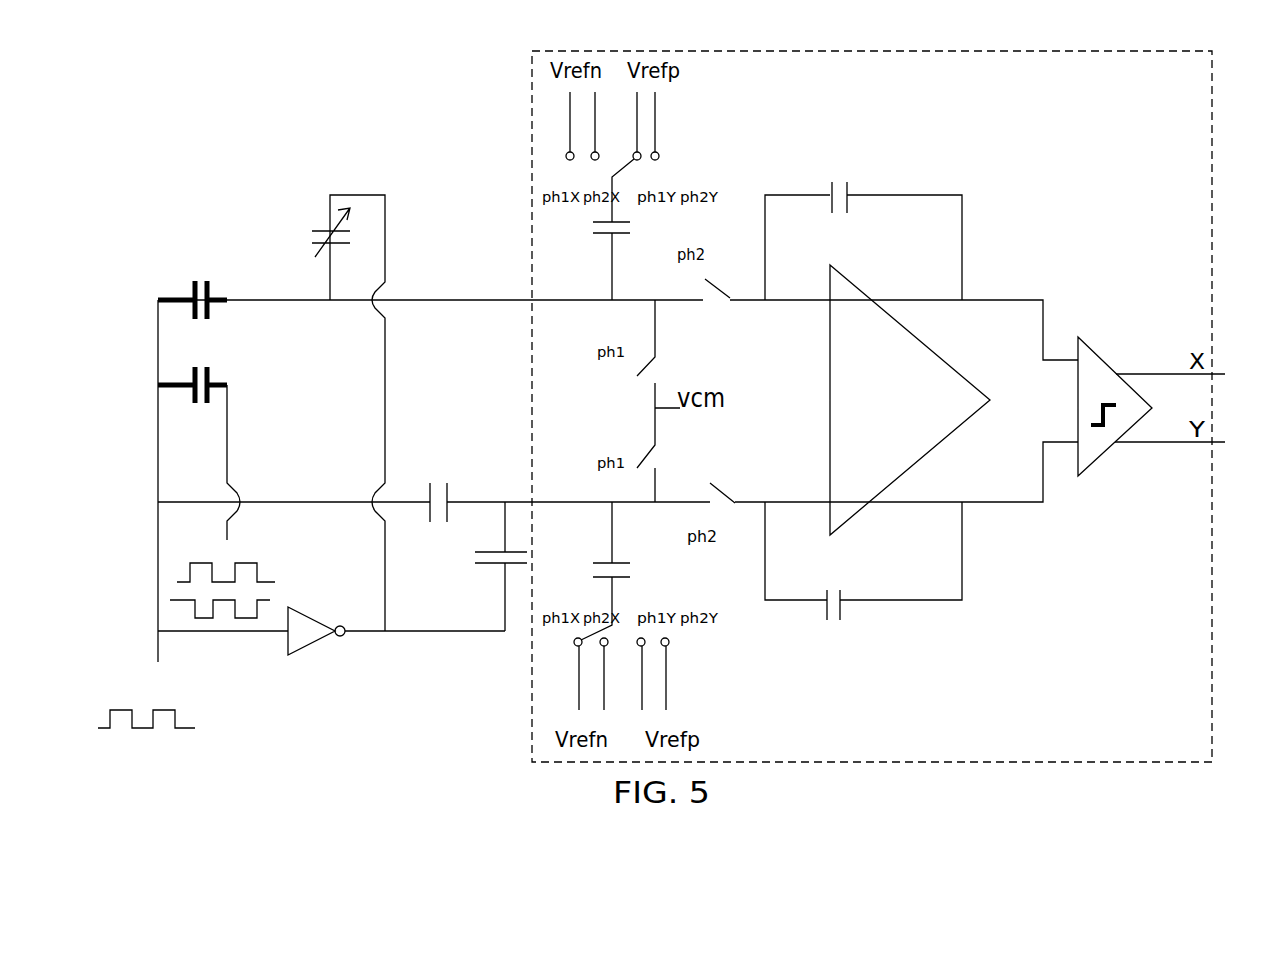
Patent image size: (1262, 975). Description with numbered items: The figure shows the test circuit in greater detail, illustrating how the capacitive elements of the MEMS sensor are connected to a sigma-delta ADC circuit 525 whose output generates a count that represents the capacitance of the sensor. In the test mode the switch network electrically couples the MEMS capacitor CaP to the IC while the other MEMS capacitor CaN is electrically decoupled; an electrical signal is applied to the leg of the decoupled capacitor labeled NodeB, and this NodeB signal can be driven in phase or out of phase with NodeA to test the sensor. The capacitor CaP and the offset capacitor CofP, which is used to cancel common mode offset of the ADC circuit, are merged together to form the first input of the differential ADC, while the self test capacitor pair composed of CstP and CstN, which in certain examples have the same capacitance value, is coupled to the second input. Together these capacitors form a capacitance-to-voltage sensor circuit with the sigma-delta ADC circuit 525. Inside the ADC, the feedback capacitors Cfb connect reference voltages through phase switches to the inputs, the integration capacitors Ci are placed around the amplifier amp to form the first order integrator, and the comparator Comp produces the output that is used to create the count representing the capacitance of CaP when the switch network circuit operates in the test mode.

The sigma-delta ADC circuit 525 is at (1205, 88).
The capacitor CaP is at (192, 284).
The capacitor CaN is at (192, 398).
The offset capacitor CofP is at (298, 228).
The self test capacitor CstP is at (447, 485).
The self test capacitor CstN is at (488, 577).
The element NodeA is at (146, 699).
The element NodeB is at (222, 577).
The feedback capacitor Cfb is at (582, 402).
The integration capacitor Ci is at (845, 401).
The amplifier amp is at (910, 400).
The comparator Comp is at (1113, 406).